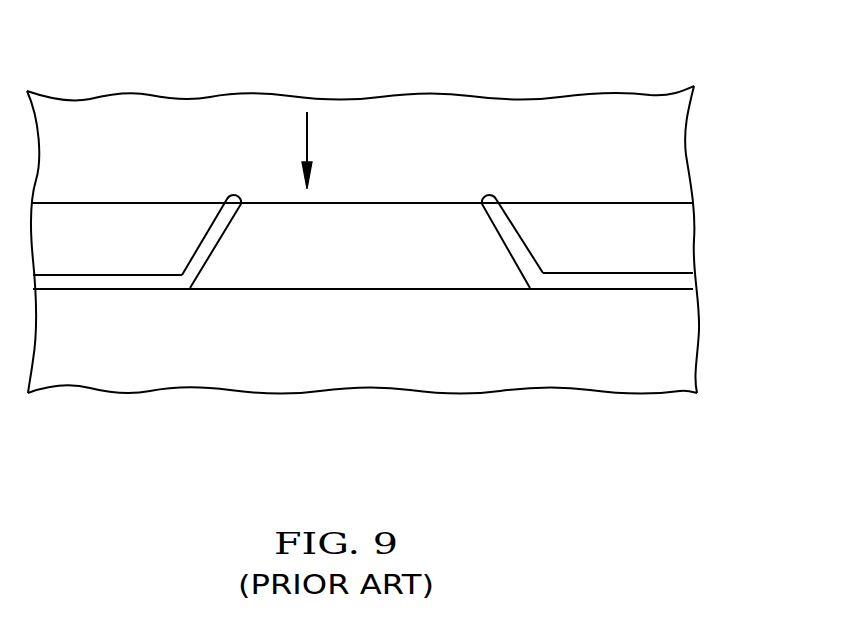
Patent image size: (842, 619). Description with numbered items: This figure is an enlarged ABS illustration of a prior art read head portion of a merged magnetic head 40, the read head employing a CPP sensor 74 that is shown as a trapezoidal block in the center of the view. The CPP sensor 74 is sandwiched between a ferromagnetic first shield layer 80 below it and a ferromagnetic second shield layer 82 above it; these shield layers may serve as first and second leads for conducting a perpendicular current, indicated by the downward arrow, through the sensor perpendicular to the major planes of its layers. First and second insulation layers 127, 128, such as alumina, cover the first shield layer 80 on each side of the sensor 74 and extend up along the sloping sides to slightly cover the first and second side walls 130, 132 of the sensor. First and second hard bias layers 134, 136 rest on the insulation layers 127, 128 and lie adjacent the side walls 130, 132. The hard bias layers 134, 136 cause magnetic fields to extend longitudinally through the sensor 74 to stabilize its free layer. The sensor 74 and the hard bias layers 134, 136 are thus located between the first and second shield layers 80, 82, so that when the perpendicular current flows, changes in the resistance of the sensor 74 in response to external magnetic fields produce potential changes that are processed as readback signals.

The merged magnetic head 40 is at (195, 82).
The CPP sensor 74 is at (430, 201).
The first shield layer 80 is at (157, 366).
The second shield layer 82 is at (665, 142).
The first insulation layer 127 is at (97, 282).
The second insulation layer 128 is at (596, 280).
The first side wall 130 is at (217, 237).
The second side wall 132 is at (508, 232).
The first hard bias layer 134 is at (104, 215).
The second hard bias layer 136 is at (615, 213).